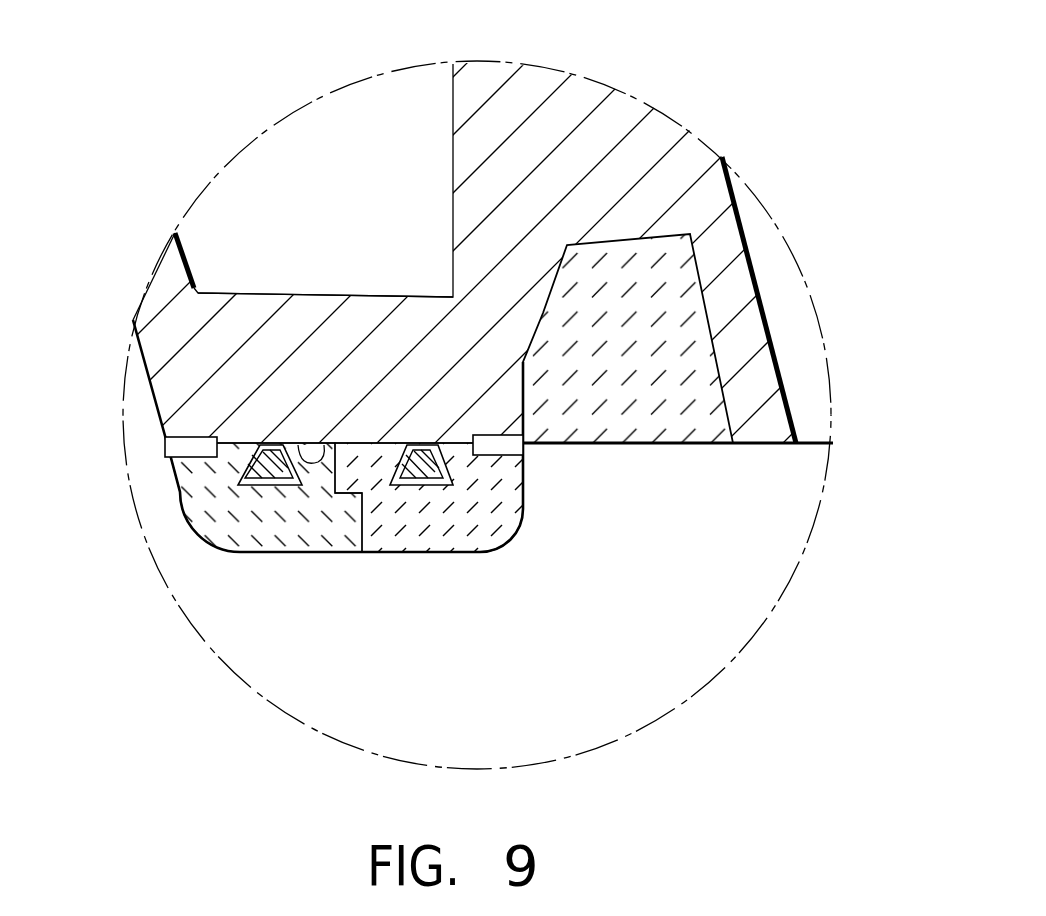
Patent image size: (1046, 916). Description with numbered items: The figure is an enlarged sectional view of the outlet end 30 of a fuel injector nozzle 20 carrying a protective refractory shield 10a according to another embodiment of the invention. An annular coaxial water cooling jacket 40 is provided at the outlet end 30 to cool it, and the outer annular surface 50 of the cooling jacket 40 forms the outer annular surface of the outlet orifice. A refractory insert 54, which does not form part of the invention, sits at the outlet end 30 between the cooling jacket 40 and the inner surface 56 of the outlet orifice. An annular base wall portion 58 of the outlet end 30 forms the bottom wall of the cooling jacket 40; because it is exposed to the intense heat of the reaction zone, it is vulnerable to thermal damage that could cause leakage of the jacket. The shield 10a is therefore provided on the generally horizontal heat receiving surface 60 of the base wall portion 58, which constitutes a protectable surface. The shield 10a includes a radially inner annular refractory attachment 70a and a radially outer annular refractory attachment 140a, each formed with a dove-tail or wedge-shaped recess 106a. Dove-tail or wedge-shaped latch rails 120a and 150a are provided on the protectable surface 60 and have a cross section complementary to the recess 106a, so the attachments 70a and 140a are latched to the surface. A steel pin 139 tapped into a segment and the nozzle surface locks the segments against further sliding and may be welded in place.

The protective refractory shield 10a is at (445, 621).
The fuel injector nozzle 20 is at (710, 98).
The outlet end 30 is at (728, 611).
The water cooling jacket 40 is at (322, 193).
The outer annular surface 50 is at (148, 390).
The refractory insert 54 is at (698, 430).
The inner surface 56 is at (748, 253).
The annular base wall portion 58 is at (351, 292).
The heat receiving surface 60 is at (300, 462).
The radially inner annular refractory attachment 70a is at (490, 555).
The wedge-shaped recess 106a is at (243, 461).
The latch rail 120a is at (452, 457).
The steel pin 139 is at (177, 448).
The radially outer annular refractory attachment 140a is at (239, 558).
The latch rail 150a is at (288, 444).